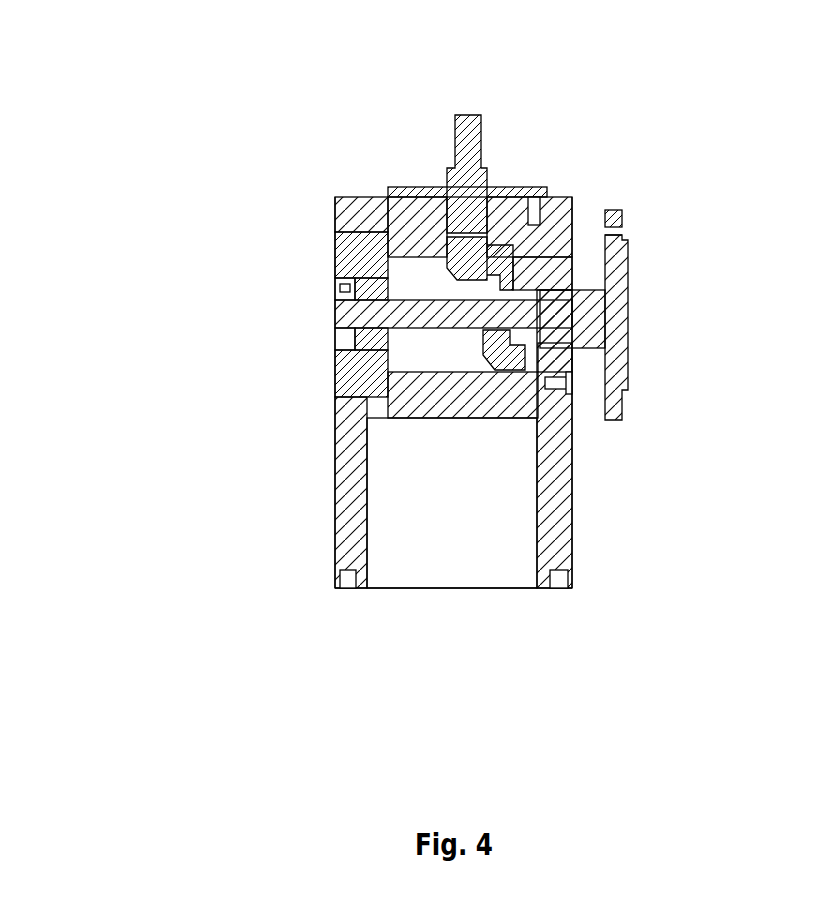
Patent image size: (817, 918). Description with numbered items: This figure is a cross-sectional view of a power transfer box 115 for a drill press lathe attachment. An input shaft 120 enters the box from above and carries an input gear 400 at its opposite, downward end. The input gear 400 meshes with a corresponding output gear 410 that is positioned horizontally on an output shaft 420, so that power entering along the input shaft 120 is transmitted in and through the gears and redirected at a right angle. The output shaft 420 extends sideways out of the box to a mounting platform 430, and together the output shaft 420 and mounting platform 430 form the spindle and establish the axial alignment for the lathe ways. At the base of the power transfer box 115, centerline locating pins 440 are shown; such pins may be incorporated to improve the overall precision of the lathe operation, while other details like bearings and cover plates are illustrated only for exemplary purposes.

The power transfer box 115 is at (333, 442).
The input shaft 120 is at (483, 137).
The input gear 400 is at (443, 243).
The output gear 410 is at (488, 372).
The output shaft 420 is at (405, 298).
The mounting platform 430 is at (623, 210).
The centerline locating pins 440 is at (343, 590).